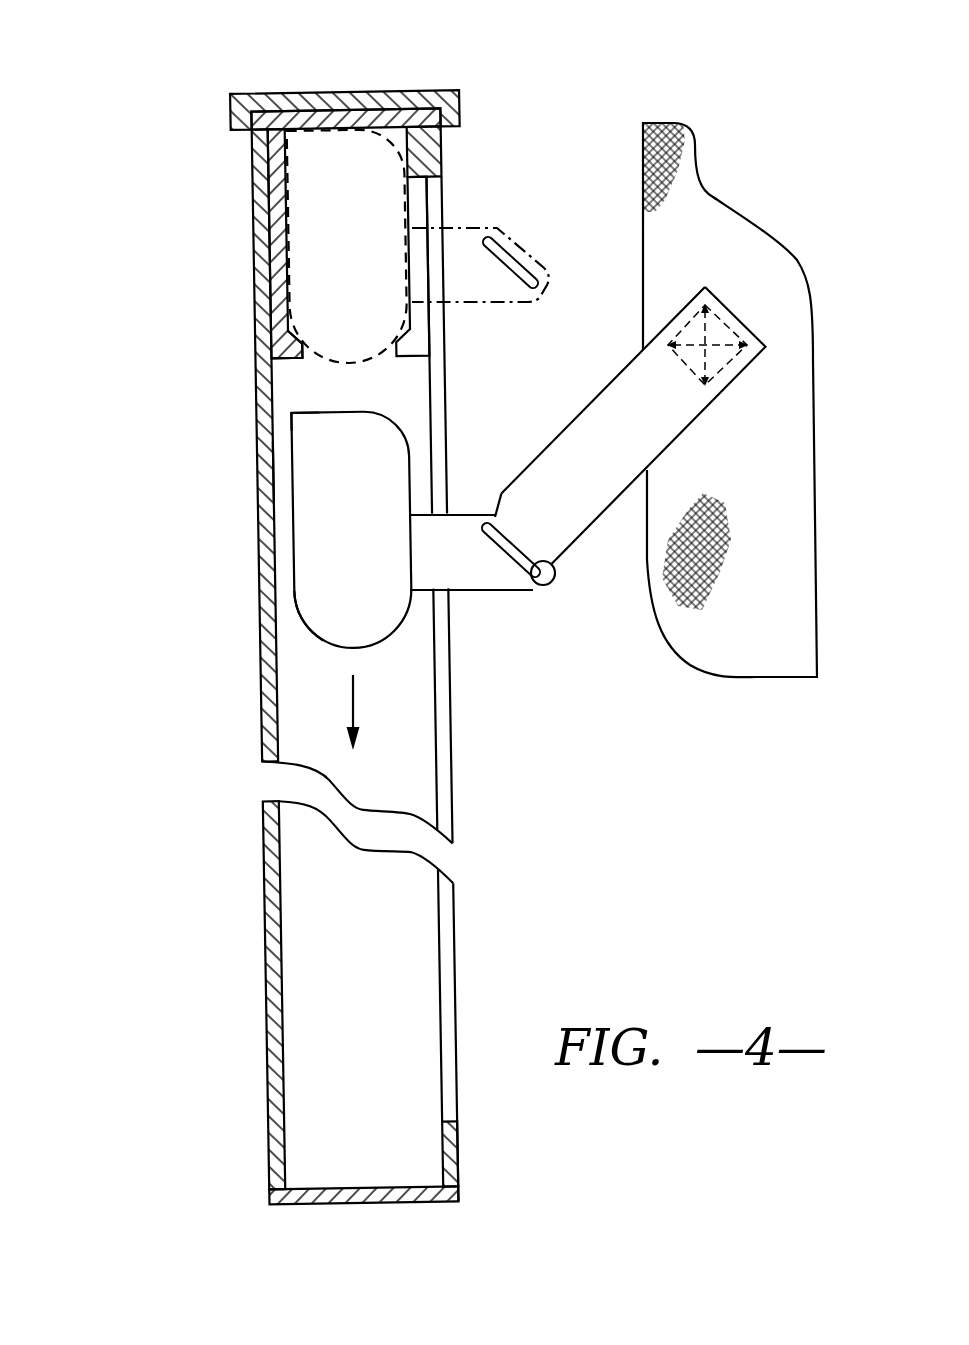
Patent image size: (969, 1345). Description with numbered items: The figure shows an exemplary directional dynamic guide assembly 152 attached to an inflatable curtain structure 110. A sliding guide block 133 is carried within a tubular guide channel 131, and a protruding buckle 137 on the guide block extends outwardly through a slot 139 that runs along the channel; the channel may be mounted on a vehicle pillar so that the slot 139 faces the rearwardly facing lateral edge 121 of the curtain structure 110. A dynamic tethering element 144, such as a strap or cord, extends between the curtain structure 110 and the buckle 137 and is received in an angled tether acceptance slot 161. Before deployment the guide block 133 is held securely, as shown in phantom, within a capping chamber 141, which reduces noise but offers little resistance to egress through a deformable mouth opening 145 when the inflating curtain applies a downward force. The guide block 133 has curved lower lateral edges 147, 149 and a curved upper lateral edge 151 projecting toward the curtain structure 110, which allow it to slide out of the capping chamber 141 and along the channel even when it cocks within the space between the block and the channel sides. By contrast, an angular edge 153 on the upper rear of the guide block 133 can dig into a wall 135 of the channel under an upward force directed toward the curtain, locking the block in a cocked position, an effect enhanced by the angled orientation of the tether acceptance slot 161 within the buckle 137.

The inflatable curtain structure 110 is at (684, 652).
The rearwardly facing lateral edge 121 is at (643, 171).
The tubular guide channel 131 is at (248, 727).
The sliding guide block 133 is at (318, 130).
The wall 135 is at (257, 470).
The protruding buckle 137 is at (462, 228).
The slot 139 is at (448, 406).
The capping chamber 141 is at (277, 185).
The dynamic tethering element 144 is at (617, 375).
The deformable mouth opening 145 is at (306, 348).
The curved lower lateral edge 147 is at (394, 642).
The curved lower lateral edge 149 is at (318, 640).
The curved upper lateral edge 151 is at (397, 432).
The directional dynamic guide assembly 152 is at (186, 85).
The angular edge 153 is at (293, 413).
The angled tether acceptance slot 161 is at (546, 588).